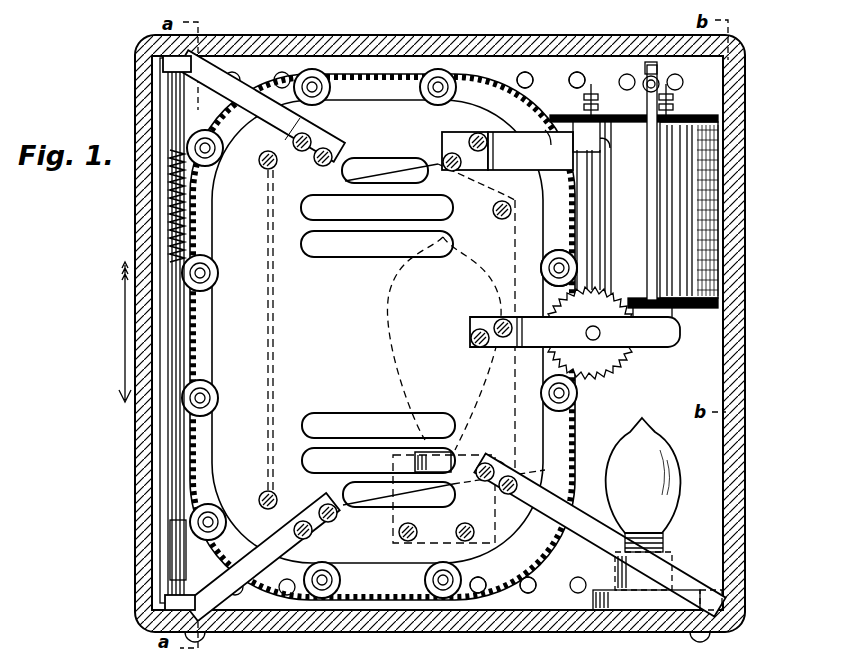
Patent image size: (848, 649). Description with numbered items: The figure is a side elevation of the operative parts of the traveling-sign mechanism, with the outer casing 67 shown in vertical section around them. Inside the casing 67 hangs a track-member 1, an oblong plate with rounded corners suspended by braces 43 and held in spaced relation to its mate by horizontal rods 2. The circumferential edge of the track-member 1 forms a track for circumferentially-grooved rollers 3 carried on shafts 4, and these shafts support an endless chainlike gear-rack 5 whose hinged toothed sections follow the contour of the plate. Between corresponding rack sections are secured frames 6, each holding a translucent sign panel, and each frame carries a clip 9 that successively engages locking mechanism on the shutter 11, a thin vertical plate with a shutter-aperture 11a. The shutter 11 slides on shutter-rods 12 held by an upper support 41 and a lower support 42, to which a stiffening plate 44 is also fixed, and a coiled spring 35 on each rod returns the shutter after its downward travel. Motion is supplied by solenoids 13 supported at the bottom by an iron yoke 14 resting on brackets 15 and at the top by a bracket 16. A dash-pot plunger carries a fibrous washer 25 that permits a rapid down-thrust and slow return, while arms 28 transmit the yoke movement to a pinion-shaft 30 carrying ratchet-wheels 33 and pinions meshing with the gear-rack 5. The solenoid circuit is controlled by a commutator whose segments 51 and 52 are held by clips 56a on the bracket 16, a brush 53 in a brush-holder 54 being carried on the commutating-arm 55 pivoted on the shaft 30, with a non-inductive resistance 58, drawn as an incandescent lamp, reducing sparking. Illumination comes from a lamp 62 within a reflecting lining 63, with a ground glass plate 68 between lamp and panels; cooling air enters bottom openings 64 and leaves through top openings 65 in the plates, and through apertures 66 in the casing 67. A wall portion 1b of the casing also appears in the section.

The track-member 1 is at (320, 485).
The casing wall 1b is at (150, 455).
The horizontal rod 2 is at (262, 168).
The circumferentially-grooved roller 3 is at (214, 398).
The shaft 4 is at (318, 102).
The gear-rack 5 is at (112, 648).
The frame 6 is at (480, 88).
The clip 9 is at (450, 72).
The shutter 11 is at (170, 332).
The shutter-aperture 11a is at (176, 530).
The shutter-rod 12 is at (180, 350).
The solenoid 13 is at (634, 211).
The iron yoke 14 is at (674, 316).
The bracket 15 is at (575, 332).
The bracket 16 is at (465, 151).
The fibrous washer 25 is at (189, 206).
The arm 28 is at (652, 228).
The pinion-shaft 30 is at (600, 338).
The ratchet-wheel 33 is at (590, 333).
The coiled spring 35 is at (175, 252).
The upper support 41 is at (192, 58).
The lower support 42 is at (178, 603).
The brace 43 is at (451, 335).
The plate 44 is at (182, 545).
The commutator-segment 51 is at (610, 112).
The commutator-segment 52 is at (592, 106).
The brush 53 is at (530, 151).
The brush-holder 54 is at (602, 186).
The commutating-arm 55 is at (572, 268).
The clip 56a is at (623, 146).
The non-inductive resistance 58 is at (657, 514).
The lamp 62 is at (444, 354).
The reflecting lining 63 is at (382, 170).
The bottom opening 64 is at (378, 443).
The top opening 65 is at (377, 226).
The aperture 66 is at (570, 76).
The casing 67 is at (738, 190).
The ground glass plate 68 is at (276, 300).